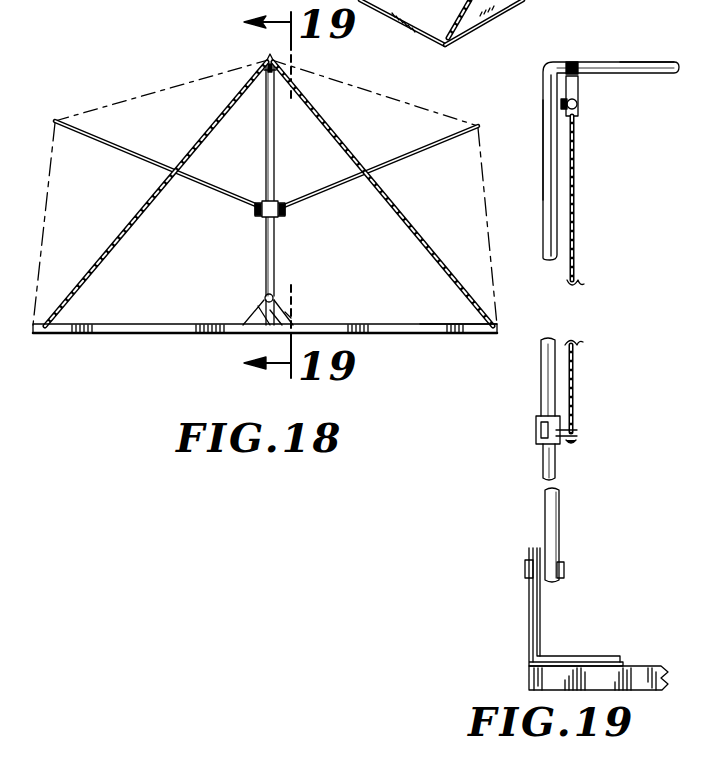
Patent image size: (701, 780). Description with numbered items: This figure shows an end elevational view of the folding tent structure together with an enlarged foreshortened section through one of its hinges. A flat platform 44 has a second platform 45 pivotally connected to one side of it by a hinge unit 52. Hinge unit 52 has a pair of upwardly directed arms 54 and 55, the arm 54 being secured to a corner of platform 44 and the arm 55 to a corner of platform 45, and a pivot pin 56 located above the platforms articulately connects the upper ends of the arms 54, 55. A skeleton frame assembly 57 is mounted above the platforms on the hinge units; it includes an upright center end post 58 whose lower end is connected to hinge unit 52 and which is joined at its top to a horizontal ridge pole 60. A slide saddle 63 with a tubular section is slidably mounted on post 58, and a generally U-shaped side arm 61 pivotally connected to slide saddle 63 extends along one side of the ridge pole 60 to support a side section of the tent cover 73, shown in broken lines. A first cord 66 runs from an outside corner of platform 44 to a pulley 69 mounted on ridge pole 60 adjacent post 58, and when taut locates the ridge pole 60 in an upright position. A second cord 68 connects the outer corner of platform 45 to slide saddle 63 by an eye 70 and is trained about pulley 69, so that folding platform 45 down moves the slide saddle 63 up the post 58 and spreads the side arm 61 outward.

In FIG. 18, the platform 44 is at (110, 334).
In FIG. 19, the platform 44 is at (642, 668).
In FIG. 18, the second platform 45 is at (420, 334).
In FIG. 18, the hinge unit 52 is at (304, 310).
In FIG. 19, the arm 54 is at (529, 624).
In FIG. 19, the arm 55 is at (548, 630).
In FIG. 18, the pivot pin 56 is at (263, 296).
In FIG. 19, the pivot pin 56 is at (524, 568).
In FIG. 18, the skeleton frame assembly 57 is at (92, 154).
In FIG. 19, the skeleton frame assembly 57 is at (668, 44).
In FIG. 18, the upright center end post 58 is at (274, 178).
In FIG. 19, the upright center end post 58 is at (544, 136).
In FIG. 19, the ridge pole 60 is at (663, 78).
In FIG. 18, the side arm 61 is at (430, 147).
In FIG. 18, the slide saddle 63 is at (256, 220).
In FIG. 19, the slide saddle 63 is at (535, 432).
In FIG. 18, the first cord 66 is at (113, 248).
In FIG. 18, the second cord 68 is at (414, 250).
In FIG. 19, the second cord 68 is at (578, 206).
In FIG. 18, the pulley 69 is at (277, 78).
In FIG. 19, the pulley 69 is at (582, 102).
In FIG. 19, the eye 70 is at (579, 437).
In FIG. 18, the tent cover 73 is at (401, 98).